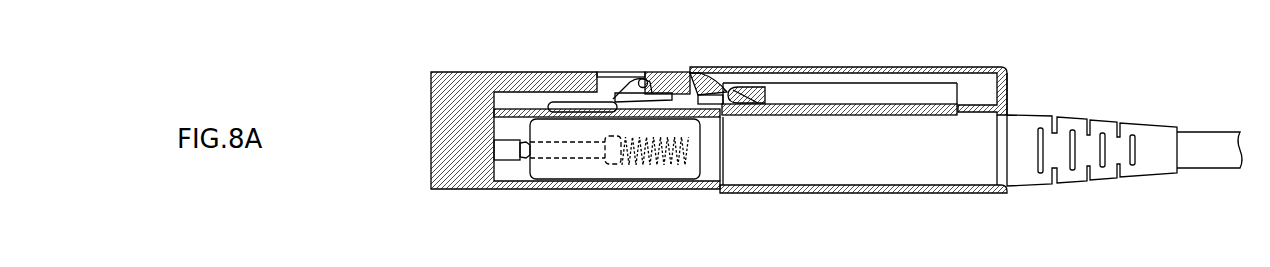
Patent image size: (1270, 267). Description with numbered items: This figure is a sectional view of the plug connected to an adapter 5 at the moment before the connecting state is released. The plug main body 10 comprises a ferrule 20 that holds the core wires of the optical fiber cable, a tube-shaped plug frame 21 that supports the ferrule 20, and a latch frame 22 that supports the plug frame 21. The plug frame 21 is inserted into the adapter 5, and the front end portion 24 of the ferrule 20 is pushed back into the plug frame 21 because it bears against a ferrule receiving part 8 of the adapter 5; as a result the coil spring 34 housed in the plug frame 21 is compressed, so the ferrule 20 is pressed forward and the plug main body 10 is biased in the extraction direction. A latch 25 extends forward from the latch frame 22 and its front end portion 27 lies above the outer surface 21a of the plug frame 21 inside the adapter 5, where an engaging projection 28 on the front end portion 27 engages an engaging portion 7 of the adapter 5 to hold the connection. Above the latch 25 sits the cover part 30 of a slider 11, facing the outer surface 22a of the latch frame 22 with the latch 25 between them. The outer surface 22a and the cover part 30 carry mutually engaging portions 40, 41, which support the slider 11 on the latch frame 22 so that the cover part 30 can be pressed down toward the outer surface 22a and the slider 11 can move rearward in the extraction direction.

The adapter 5 is at (429, 90).
The engaging portion of the adapter 7 is at (650, 88).
The ferrule receiving part 8 is at (508, 156).
The plug main body 10 is at (910, 202).
The slider 11 is at (1012, 63).
The ferrule 20 is at (577, 172).
The plug frame 21 is at (611, 173).
The outer surface of the plug frame 21a is at (657, 113).
The latch frame 22 is at (805, 193).
The outer surface of the latch frame 22a is at (827, 104).
The front end portion of the ferrule 24 is at (526, 158).
The latch 25 is at (627, 82).
The front end portion of the latch 27 is at (624, 75).
The engaging projection 28 is at (641, 78).
The cover part 30 is at (870, 68).
The coil spring 34 is at (651, 163).
The engaging portion of the latch frame outer surface 40 is at (768, 79).
The engaging portion of the cover part 41 is at (707, 109).